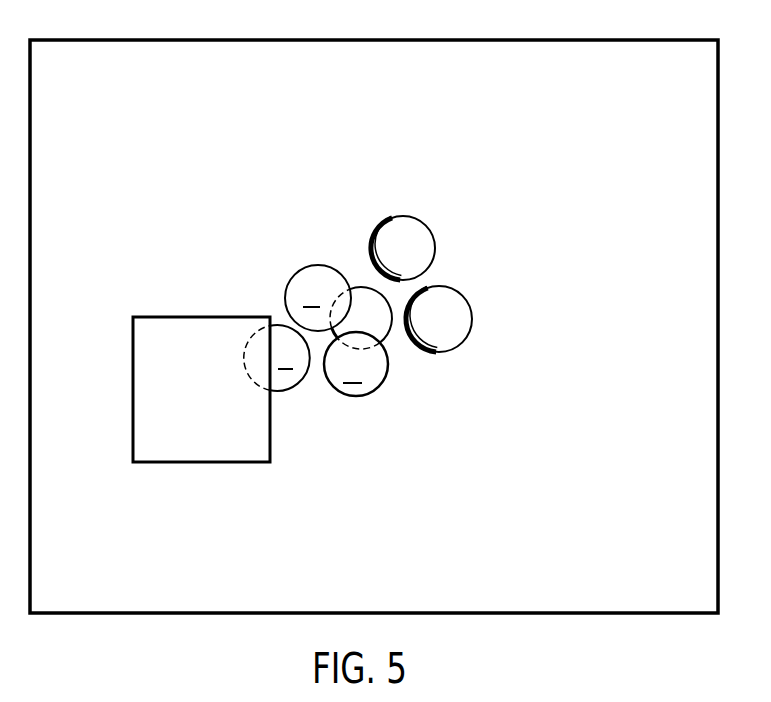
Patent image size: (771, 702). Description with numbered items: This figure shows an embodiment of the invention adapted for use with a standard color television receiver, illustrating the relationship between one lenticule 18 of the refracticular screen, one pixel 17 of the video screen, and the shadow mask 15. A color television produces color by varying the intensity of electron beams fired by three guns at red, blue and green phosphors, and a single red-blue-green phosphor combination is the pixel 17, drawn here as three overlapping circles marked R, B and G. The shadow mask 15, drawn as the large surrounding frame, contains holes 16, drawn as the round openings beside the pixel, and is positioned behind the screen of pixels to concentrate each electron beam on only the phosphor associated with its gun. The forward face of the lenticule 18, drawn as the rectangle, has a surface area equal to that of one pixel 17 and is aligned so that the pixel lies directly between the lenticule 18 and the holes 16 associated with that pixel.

The shadow mask 15 is at (682, 99).
The holes 16 is at (467, 302).
The pixel 17 is at (303, 265).
The lenticule 18 is at (133, 348).